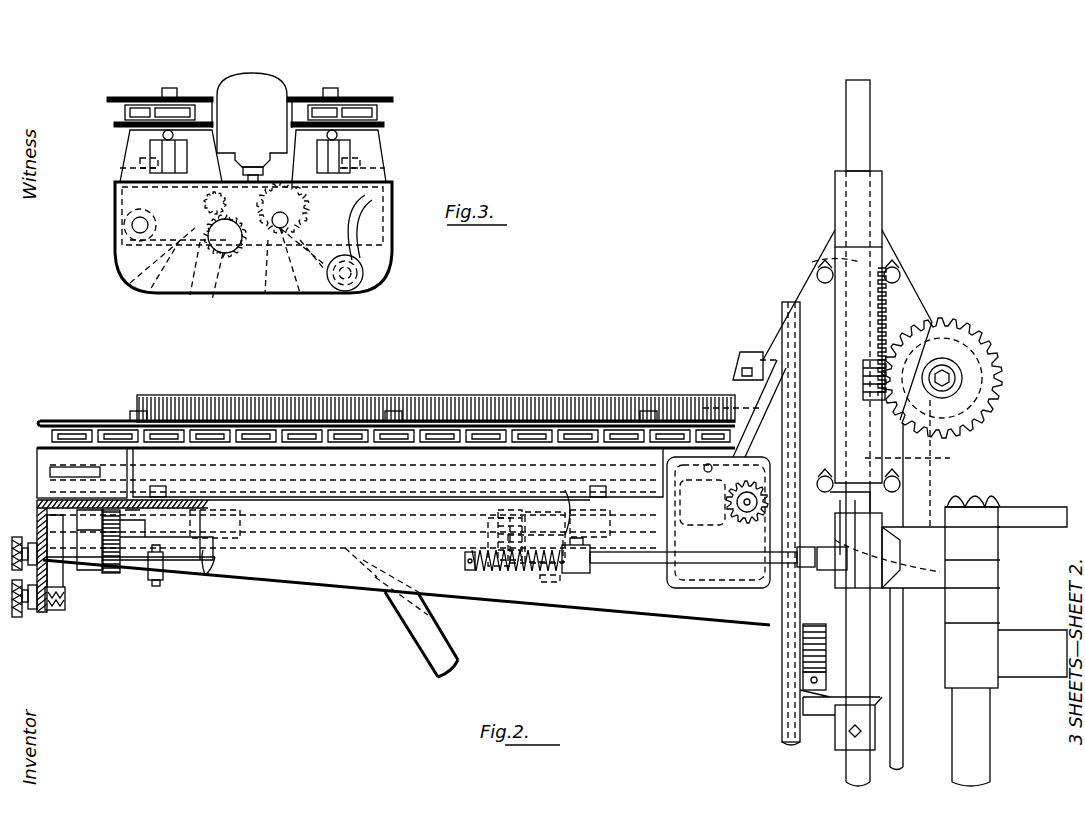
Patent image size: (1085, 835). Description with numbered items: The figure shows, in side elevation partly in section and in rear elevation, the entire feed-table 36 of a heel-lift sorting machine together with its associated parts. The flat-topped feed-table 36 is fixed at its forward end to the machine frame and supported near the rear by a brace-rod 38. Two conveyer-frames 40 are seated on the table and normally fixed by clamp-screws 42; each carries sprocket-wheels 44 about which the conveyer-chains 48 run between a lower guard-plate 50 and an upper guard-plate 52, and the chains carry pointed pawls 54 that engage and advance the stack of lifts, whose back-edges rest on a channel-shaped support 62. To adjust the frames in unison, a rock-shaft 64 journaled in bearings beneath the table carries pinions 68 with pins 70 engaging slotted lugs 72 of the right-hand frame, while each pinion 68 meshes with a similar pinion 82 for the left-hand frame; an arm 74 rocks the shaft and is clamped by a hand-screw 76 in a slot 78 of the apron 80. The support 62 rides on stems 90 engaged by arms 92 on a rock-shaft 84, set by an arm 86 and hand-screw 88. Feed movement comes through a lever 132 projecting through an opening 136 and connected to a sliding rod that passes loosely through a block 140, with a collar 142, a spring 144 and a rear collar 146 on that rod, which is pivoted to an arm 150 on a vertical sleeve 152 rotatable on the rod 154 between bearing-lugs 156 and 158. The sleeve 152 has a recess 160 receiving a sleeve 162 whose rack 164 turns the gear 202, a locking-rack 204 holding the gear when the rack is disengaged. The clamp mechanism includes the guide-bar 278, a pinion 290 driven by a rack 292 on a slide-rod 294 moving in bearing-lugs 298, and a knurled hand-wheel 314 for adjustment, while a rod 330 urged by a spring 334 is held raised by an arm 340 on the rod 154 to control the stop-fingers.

In FIG. 2, the feed-table 36 is at (565, 575).
In FIG. 2, the brace-rod 38 is at (390, 625).
In FIG. 3, the conveyer-frames 40 is at (133, 140).
In FIG. 2, the conveyer-frames 40 is at (425, 475).
In FIG. 3, the clamp-screws 42 is at (130, 168).
In FIG. 2, the clamp-screws 42 is at (160, 486).
In FIG. 3, the sprocket-wheels 44 is at (335, 108).
In FIG. 2, the sprocket-wheels 44 is at (75, 428).
In FIG. 2, the conveyer-chains 48 is at (375, 400).
In FIG. 3, the lower guard-plate 50 is at (385, 124).
In FIG. 3, the upper guard-plate 52 is at (360, 100).
In FIG. 3, the pointed pawls 54 is at (195, 105).
In FIG. 3, the channel-shaped support 62 is at (255, 152).
In FIG. 2, the channel-shaped support 62 is at (255, 475).
In FIG. 3, the rock-shaft 64 is at (296, 272).
In FIG. 2, the rock-shaft 64 is at (140, 560).
In FIG. 3, the pinions 68 is at (280, 288).
In FIG. 3, the pin 70 is at (270, 200).
In FIG. 3, the lugs 72 is at (290, 218).
In FIG. 2, the lugs 72 is at (195, 525).
In FIG. 3, the arm 74 is at (320, 275).
In FIG. 2, the arm 74 is at (62, 578).
In FIG. 3, the hand-screw 76 is at (358, 285).
In FIG. 3, the slot 78 is at (370, 232).
In FIG. 2, the slot 78 is at (15, 537).
In FIG. 3, the apron 80 is at (380, 270).
In FIG. 2, the apron 80 is at (37, 503).
In FIG. 3, the pinion 82 is at (195, 262).
In FIG. 3, the rock-shaft 84 is at (132, 227).
In FIG. 2, the rock-shaft 84 is at (210, 575).
In FIG. 3, the arm 86 is at (130, 283).
In FIG. 3, the hand-screw 88 is at (230, 255).
In FIG. 3, the stems 90 is at (262, 170).
In FIG. 3, the arms 92 is at (216, 289).
In FIG. 2, the arms 92 is at (155, 582).
In FIG. 2, the lever 132 is at (605, 525).
In FIG. 2, the opening 136 is at (590, 580).
In FIG. 2, the block 140 is at (570, 490).
In FIG. 2, the collar 142 is at (590, 570).
In FIG. 2, the spring 144 is at (520, 575).
In FIG. 2, the collar 146 is at (472, 575).
In FIG. 2, the arm 150 is at (878, 570).
In FIG. 2, the vertical sleeve 152 is at (840, 255).
In FIG. 2, the rod 154 is at (858, 115).
In FIG. 2, the upper bearing-lug 156 is at (875, 193).
In FIG. 2, the lower bearing-lug 158 is at (902, 567).
In FIG. 2, the interior recess 160 is at (935, 460).
In FIG. 2, the sleeve 162 is at (817, 275).
In FIG. 2, the rack 164 is at (888, 310).
In FIG. 2, the gear 202 is at (995, 342).
In FIG. 2, the locking-rack 204 is at (895, 395).
In FIG. 2, the guide-bar 278 is at (750, 368).
In FIG. 2, the pinion 290 is at (750, 525).
In FIG. 2, the rack 292 is at (760, 395).
In FIG. 2, the vertical slide-rod 294 is at (782, 305).
In FIG. 2, the bearing-lugs 298 is at (770, 625).
In FIG. 2, the knurled hand-wheel 314 is at (732, 510).
In FIG. 2, the rod 330 is at (803, 690).
In FIG. 2, the spring 334 is at (800, 655).
In FIG. 2, the arm 340 is at (835, 730).